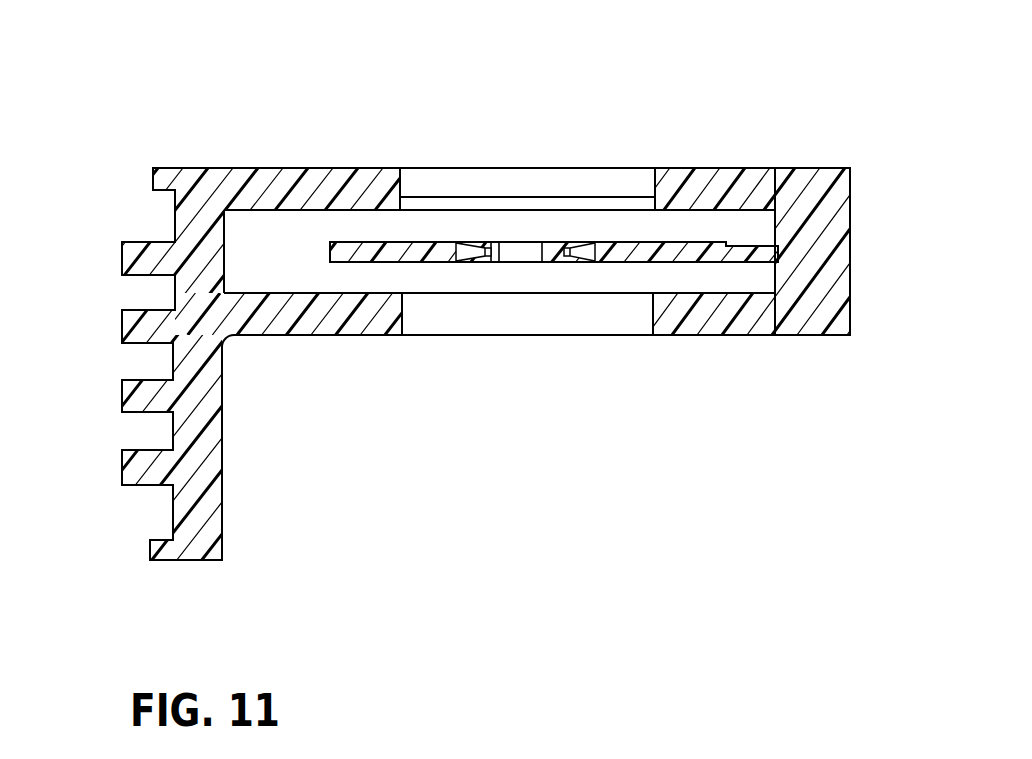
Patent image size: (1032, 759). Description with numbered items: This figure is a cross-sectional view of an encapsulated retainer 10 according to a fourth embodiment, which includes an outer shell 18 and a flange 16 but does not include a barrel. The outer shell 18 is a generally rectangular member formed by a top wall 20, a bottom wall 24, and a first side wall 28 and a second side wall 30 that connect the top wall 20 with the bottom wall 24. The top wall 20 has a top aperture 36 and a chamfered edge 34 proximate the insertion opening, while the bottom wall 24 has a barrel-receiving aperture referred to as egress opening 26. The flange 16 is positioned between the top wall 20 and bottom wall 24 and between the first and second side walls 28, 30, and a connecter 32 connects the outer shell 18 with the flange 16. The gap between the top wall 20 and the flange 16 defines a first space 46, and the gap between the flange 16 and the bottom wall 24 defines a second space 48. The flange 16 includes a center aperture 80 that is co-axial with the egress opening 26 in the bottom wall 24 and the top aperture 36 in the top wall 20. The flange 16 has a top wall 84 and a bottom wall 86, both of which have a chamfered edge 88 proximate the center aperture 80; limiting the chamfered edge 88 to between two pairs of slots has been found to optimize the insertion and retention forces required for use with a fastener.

The encapsulated retainer 10 is at (622, 37).
The flange 16 is at (383, 262).
The outer shell 18 is at (807, 167).
The top wall 20 is at (268, 168).
The bottom wall 24 is at (705, 335).
The egress opening 26 is at (590, 318).
The first side wall 28 is at (175, 204).
The second side wall 30 is at (852, 219).
The connecter 32 is at (753, 262).
The chamfered edge 34 is at (392, 168).
The top aperture 36 is at (528, 186).
The first space 46 is at (345, 225).
The second space 48 is at (338, 280).
The center aperture 80 is at (529, 254).
The top wall 84 is at (647, 238).
The bottom wall 86 is at (668, 265).
The chamfered edge 88 is at (487, 258).